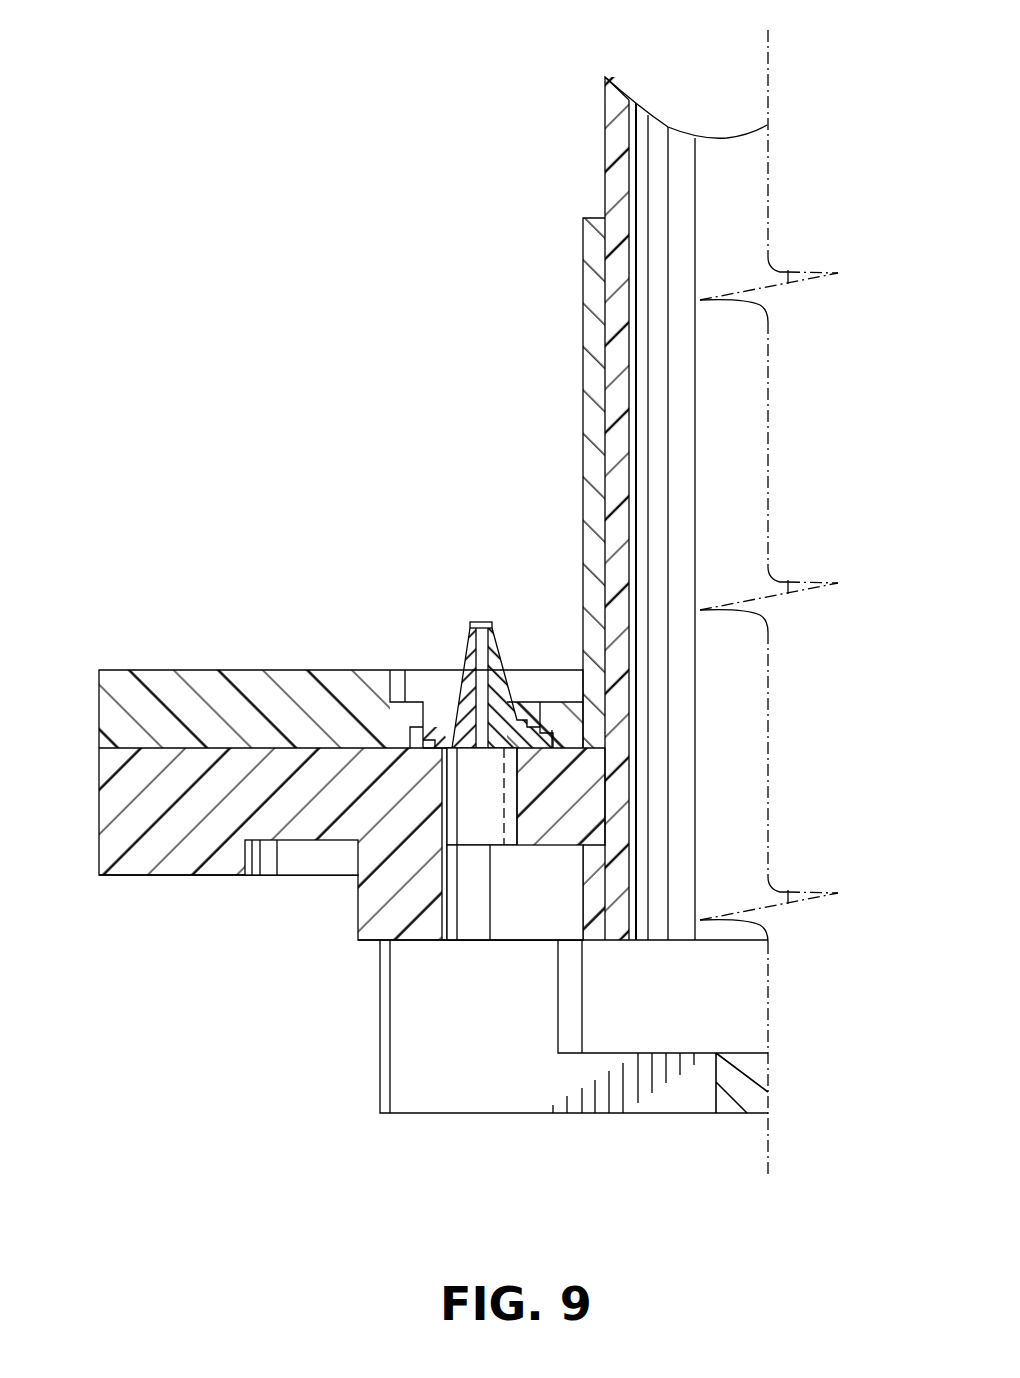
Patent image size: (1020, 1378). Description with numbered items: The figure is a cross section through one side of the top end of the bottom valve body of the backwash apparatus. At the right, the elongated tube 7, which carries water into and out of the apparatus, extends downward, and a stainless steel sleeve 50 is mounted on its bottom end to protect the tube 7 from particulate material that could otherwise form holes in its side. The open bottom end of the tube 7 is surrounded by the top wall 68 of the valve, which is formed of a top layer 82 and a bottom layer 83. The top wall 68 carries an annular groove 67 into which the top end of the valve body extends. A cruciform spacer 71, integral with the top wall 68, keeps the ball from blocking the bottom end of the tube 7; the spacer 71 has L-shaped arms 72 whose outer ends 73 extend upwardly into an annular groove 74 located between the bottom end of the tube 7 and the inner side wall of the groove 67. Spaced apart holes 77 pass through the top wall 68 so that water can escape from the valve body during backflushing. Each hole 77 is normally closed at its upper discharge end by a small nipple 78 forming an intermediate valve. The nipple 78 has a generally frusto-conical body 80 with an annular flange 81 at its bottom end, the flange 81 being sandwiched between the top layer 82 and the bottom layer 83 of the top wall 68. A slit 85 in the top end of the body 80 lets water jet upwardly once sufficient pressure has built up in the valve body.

The tube 7 is at (700, 168).
The stainless steel sleeve 50 is at (583, 460).
The annular groove 67 is at (293, 867).
The top wall 68 is at (98, 772).
The cruciform spacer 71 is at (578, 1117).
The L-shaped arms 72 is at (663, 1100).
The outer ends 73 is at (407, 1102).
The annular groove 74 is at (440, 885).
The holes 77 is at (485, 843).
The nipples 78 is at (471, 624).
The frusto-conical body 80 is at (462, 718).
The annular flange 81 is at (412, 740).
The top layer 82 is at (125, 682).
The bottom layer 83 is at (110, 855).
The slit 85 is at (480, 627).